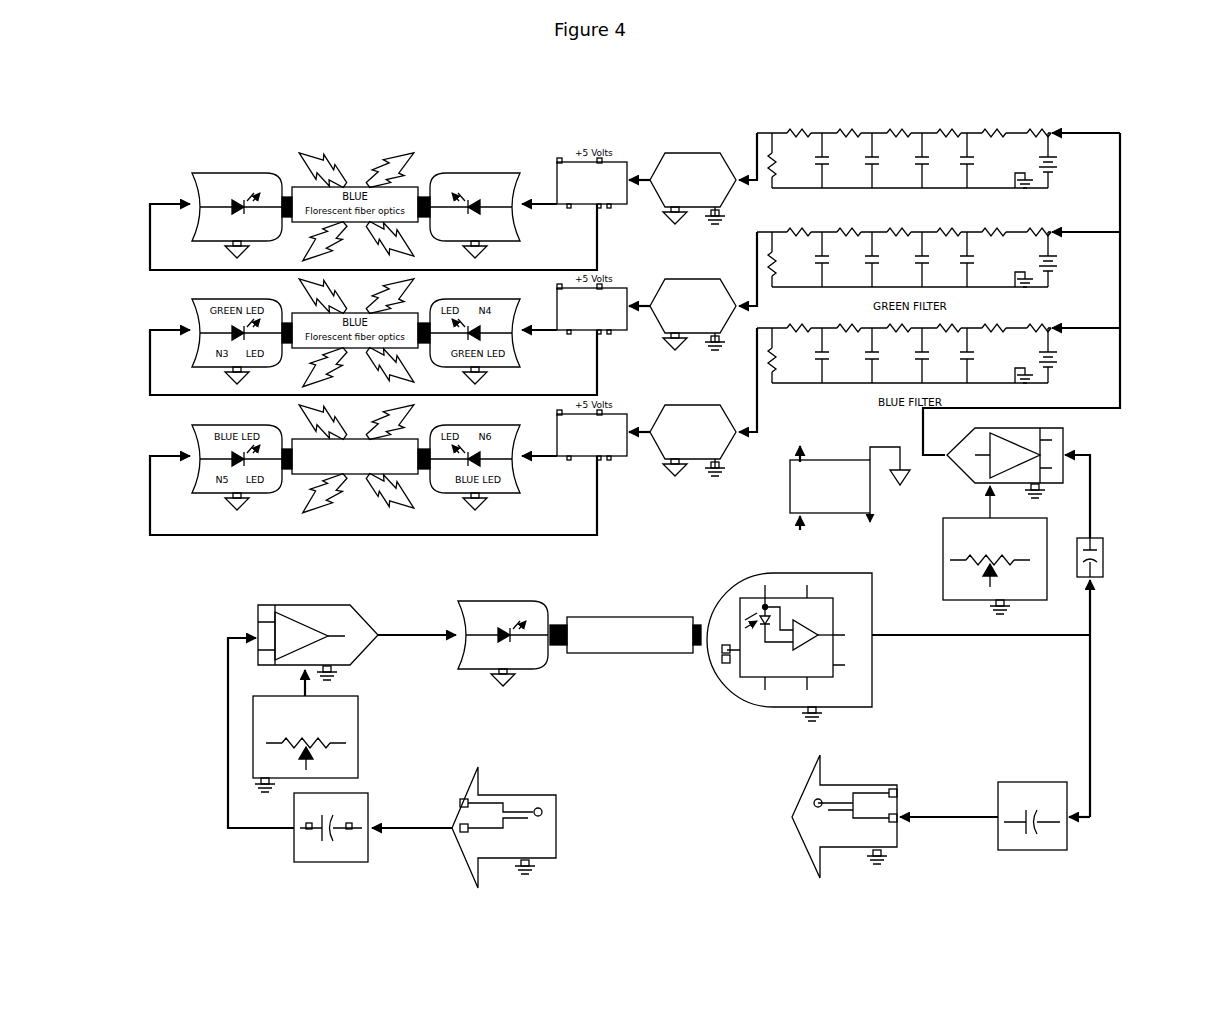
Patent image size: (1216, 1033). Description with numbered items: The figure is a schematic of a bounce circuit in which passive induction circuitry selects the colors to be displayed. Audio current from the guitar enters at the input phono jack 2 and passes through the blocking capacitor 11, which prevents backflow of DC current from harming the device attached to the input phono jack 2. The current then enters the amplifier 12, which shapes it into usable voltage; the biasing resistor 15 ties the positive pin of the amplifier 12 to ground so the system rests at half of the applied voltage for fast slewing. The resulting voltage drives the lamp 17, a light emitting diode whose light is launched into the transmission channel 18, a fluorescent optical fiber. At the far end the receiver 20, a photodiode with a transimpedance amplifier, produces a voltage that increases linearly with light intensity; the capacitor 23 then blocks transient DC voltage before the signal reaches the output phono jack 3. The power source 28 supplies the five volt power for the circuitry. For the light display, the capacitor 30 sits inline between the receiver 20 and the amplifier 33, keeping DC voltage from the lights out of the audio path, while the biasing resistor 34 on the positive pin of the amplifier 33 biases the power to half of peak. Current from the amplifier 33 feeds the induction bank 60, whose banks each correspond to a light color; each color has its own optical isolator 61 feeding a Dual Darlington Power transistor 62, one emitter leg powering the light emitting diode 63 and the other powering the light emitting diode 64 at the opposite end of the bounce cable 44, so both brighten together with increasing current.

The induction bank 60 is at (830, 125).
The optical isolator 61 is at (688, 143).
The Dual Darlington Power transistor 62 is at (578, 142).
The light emitting diode 63 is at (468, 163).
The light emitting diode 64 is at (185, 230).
The bounce cable 44 is at (297, 500).
The power source 28 is at (778, 497).
The amplifier 33 is at (1068, 437).
The capacitor 30 is at (1128, 566).
The biasing resistor 34 is at (1052, 597).
The amplifier 12 is at (252, 625).
The biasing resistor 15 is at (251, 730).
The blocking capacitor 11 is at (322, 877).
The input phono jack 2 is at (563, 877).
The lamp 17 is at (533, 679).
The transmission channel 18 is at (628, 669).
The receiver 20 is at (886, 691).
The output phono jack 3 is at (865, 881).
The capacitor 23 is at (1040, 866).